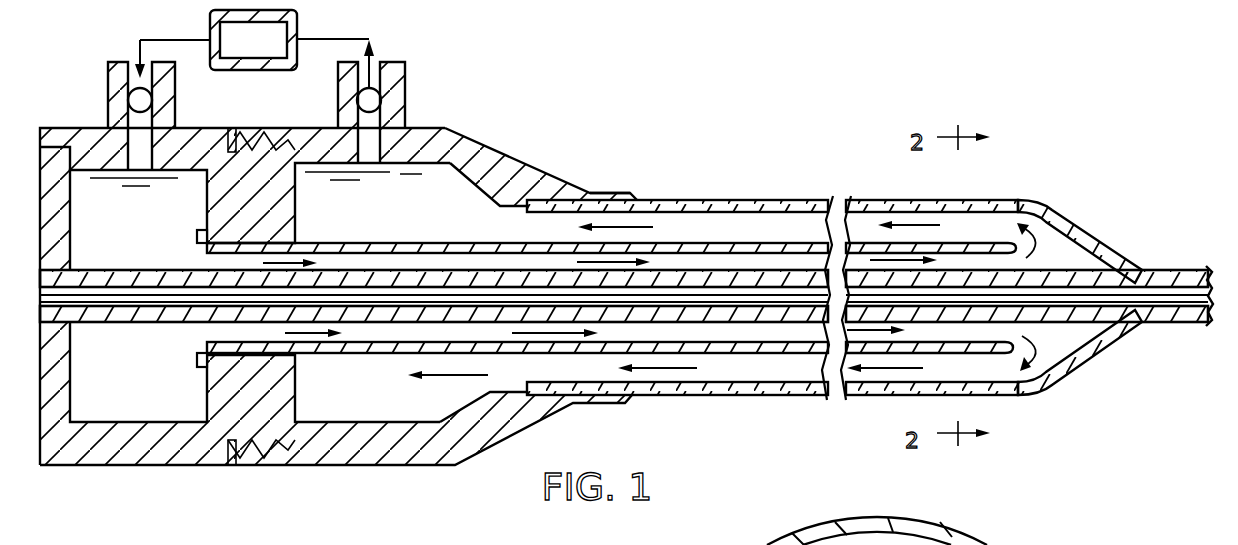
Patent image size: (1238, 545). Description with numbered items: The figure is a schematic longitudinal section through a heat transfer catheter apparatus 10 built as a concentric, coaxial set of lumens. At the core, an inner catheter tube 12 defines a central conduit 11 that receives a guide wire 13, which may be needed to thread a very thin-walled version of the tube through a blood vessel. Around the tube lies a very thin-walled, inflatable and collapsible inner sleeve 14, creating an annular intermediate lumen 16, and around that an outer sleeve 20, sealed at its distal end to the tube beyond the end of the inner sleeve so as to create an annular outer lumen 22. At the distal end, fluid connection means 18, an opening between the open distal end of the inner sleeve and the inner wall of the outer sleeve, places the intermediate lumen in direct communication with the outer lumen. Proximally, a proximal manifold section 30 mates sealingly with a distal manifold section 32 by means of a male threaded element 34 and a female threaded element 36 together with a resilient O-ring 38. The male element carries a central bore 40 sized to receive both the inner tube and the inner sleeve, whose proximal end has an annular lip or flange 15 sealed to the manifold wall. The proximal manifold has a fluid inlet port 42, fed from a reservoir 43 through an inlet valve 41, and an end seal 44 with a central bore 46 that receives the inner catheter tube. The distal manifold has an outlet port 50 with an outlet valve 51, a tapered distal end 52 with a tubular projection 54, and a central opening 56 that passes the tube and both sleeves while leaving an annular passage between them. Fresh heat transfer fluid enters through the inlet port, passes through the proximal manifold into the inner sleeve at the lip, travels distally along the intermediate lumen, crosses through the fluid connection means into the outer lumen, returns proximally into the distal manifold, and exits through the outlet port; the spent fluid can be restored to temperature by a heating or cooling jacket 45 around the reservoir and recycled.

The heat transfer catheter apparatus 10 is at (626, 275).
The central conduit 11 is at (1170, 290).
The inner catheter tube 12 is at (777, 277).
The guide wire 13 is at (412, 298).
The inner sleeve 14 is at (970, 240).
The annular lip or flange 15 is at (198, 236).
The intermediate lumen 16 is at (757, 263).
The fluid connection means 18 is at (1080, 257).
The outer sleeve 20 is at (884, 200).
The outer lumen 22 is at (693, 200).
The proximal manifold section 30 is at (178, 478).
The distal manifold section 32 is at (381, 478).
The male threaded element 34 is at (297, 202).
The female threaded element 36 is at (272, 130).
The O-ring 38 is at (234, 128).
The bore 40 is at (214, 250).
The inlet valve 41 is at (126, 100).
The fluid inlet port 42 is at (139, 64).
The reservoir 43 is at (238, 52).
The end seal 44 is at (68, 211).
The heating or cooling jacket 45 is at (298, 24).
The bore 46 is at (72, 262).
The outlet port 50 is at (378, 64).
The outlet valve 51 is at (378, 100).
The tapered distal end 52 is at (515, 168).
The tubular projection 54 is at (598, 193).
The opening 56 is at (510, 206).